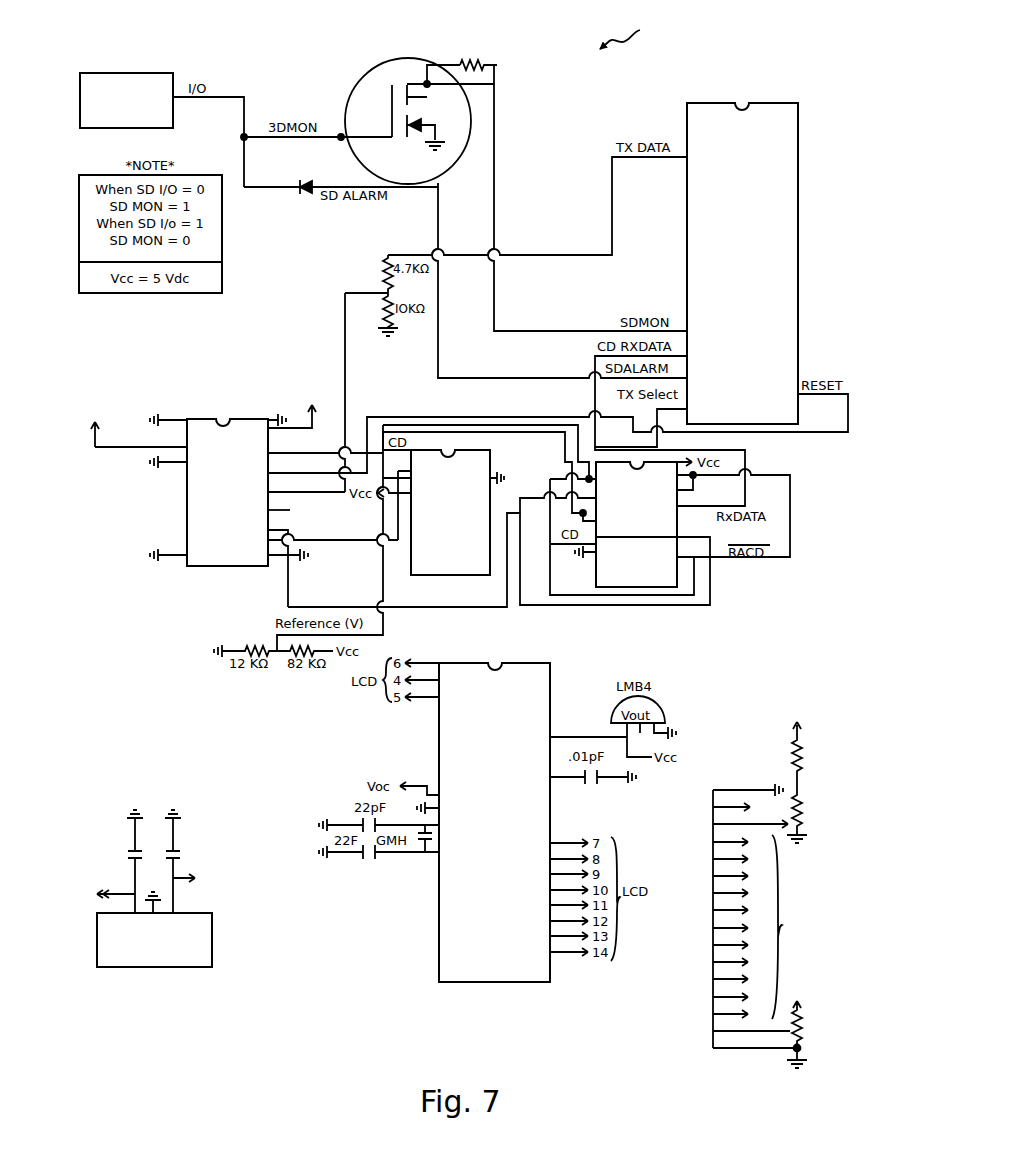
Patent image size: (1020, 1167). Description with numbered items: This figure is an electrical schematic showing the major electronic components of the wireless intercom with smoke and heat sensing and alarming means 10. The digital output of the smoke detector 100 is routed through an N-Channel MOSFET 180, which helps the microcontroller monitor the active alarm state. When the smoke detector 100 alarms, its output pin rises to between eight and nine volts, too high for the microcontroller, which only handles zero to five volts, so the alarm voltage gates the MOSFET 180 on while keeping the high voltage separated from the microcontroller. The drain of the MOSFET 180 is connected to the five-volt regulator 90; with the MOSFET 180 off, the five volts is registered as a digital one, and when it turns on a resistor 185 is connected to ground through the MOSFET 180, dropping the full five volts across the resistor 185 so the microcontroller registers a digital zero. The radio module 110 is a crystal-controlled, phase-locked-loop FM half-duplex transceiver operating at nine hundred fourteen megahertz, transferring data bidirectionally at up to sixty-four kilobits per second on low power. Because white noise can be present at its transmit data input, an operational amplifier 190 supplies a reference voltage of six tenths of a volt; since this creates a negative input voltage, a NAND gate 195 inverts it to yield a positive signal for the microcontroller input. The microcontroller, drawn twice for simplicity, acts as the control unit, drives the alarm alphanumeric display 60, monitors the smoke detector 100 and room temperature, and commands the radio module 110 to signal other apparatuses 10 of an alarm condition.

The wireless intercom with smoke and heat sensing and alarming means 10 is at (632, 32).
The alarm alphanumeric display 60 is at (745, 785).
The 5-volt regulator 90 is at (212, 953).
The smoke detector 100 is at (130, 72).
The radio module 110 is at (214, 567).
The N-Channel MOSFET 180 is at (471, 115).
The resistor 185 is at (468, 62).
The operational amplifier 190 is at (475, 570).
The NAND gate 195 is at (625, 580).